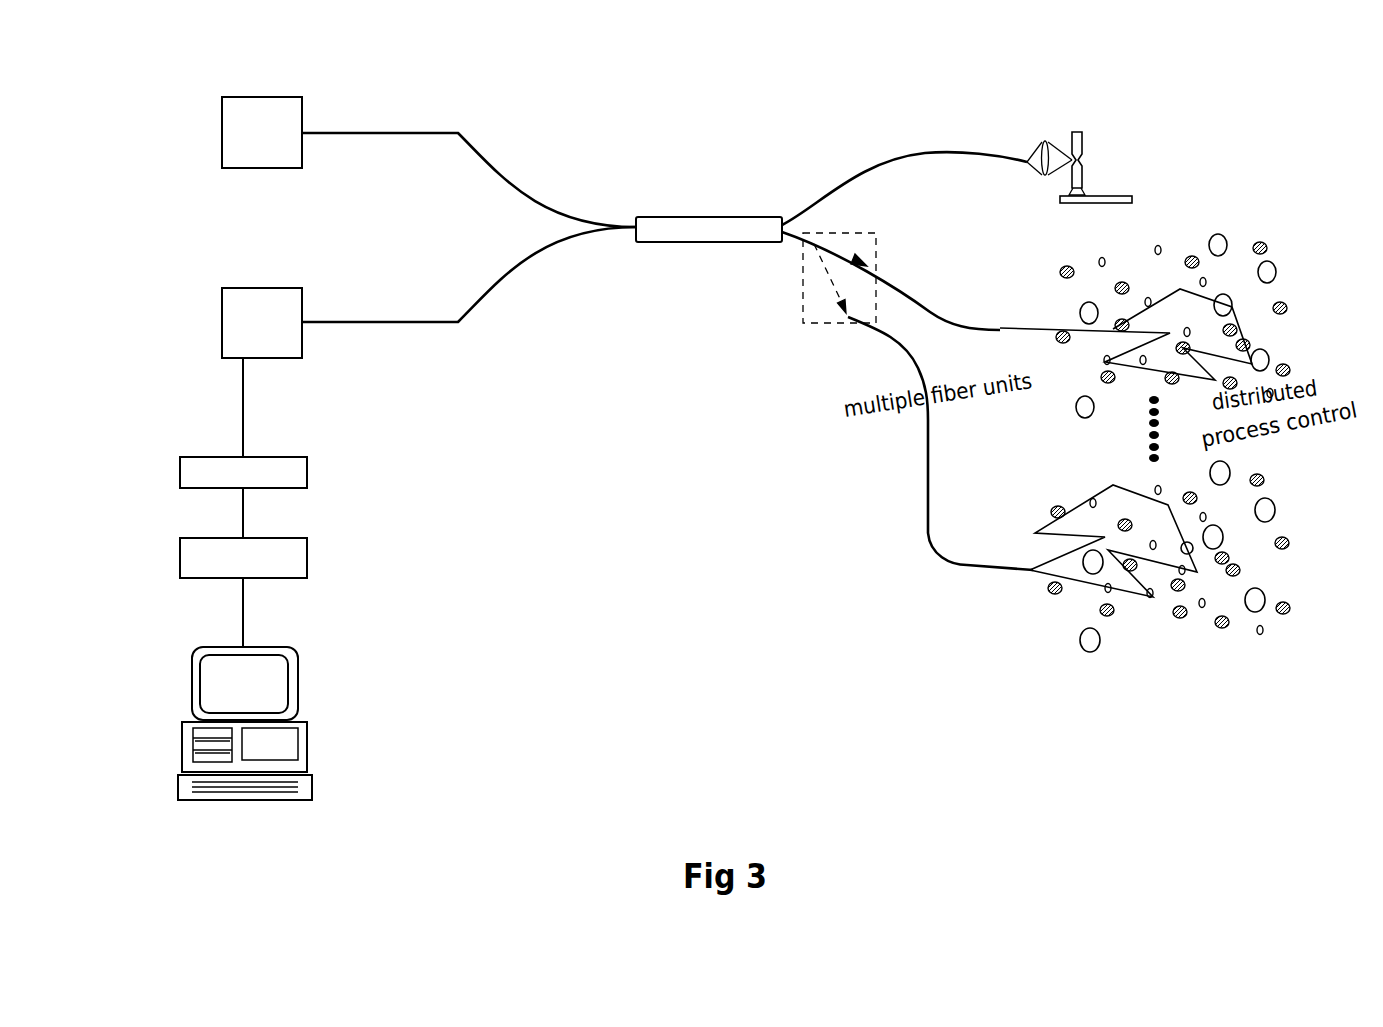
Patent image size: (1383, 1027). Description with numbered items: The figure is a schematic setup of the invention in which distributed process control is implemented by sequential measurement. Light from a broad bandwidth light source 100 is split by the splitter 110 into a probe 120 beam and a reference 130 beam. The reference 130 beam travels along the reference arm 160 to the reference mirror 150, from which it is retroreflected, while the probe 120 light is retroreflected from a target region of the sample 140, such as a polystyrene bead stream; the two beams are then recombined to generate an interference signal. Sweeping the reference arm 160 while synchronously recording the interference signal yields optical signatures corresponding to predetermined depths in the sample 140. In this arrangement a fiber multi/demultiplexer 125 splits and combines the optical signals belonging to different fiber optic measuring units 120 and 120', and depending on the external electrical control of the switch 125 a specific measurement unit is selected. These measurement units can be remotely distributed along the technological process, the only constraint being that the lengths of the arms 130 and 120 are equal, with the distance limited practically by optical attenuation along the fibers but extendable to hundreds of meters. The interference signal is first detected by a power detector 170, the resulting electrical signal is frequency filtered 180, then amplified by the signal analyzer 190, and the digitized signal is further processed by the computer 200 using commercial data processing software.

The broad bandwidth light source 100 is at (300, 97).
The splitter 110 is at (704, 215).
The probe 120 is at (905, 281).
The fiber optic measuring unit 120' is at (940, 443).
The fiber multi/demultiplexer 125 is at (876, 235).
The reference 130 is at (866, 170).
The sample 140 is at (1280, 262).
The reference mirror 150 is at (1080, 130).
The reference arm 160 is at (1132, 197).
The power detector 170 is at (300, 288).
The frequency filter 180 is at (308, 457).
The signal analyzer 190 is at (308, 538).
The computer 200 is at (298, 667).